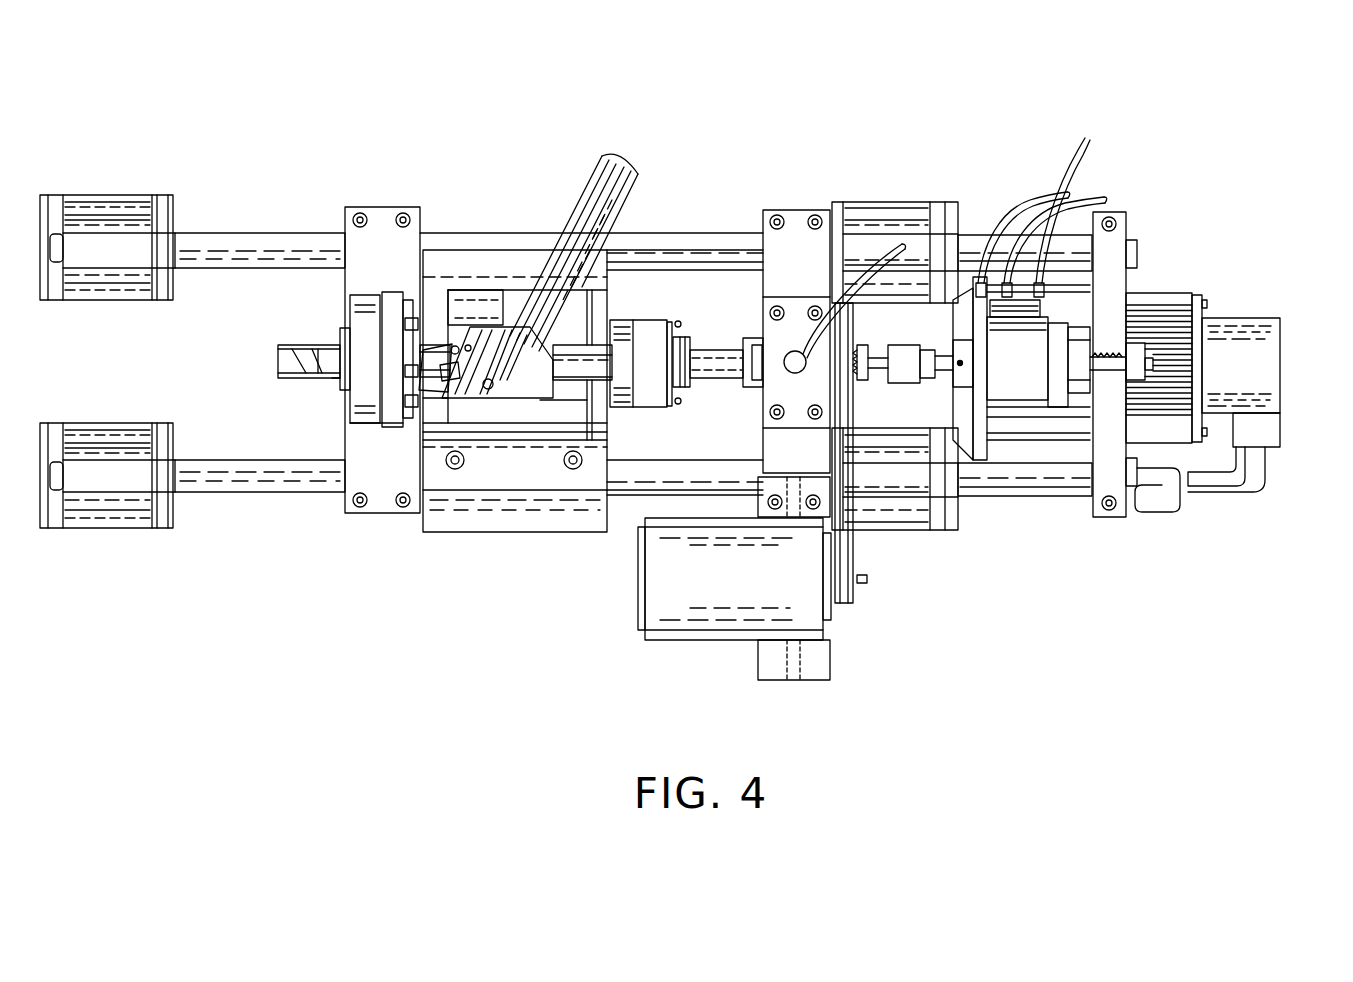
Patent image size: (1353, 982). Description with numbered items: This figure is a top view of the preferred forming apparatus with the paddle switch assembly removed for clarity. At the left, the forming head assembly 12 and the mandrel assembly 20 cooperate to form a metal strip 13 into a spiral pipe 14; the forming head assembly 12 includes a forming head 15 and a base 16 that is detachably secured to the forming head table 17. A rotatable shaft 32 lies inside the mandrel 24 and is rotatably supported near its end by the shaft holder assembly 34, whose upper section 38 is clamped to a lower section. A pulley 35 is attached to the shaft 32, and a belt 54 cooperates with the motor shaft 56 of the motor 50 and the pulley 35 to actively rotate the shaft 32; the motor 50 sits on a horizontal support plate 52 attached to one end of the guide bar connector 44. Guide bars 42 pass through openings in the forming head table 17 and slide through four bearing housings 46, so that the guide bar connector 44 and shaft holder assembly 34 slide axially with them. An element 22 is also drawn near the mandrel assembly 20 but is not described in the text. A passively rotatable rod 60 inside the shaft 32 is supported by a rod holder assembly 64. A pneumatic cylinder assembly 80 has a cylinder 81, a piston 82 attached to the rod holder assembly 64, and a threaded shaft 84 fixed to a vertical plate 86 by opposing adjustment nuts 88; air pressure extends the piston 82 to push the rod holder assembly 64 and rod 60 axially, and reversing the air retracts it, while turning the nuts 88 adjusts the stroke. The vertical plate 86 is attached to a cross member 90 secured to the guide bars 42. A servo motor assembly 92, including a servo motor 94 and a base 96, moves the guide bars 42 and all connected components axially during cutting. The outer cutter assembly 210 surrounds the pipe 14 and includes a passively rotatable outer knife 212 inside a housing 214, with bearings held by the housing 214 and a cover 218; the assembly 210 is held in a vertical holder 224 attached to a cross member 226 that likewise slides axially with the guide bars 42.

The forming head assembly 12 is at (500, 322).
The metal strip 13 is at (593, 167).
The spiral pipe 14 is at (300, 378).
The forming head 15 is at (545, 400).
The base 16 is at (437, 307).
The forming head table 17 is at (485, 532).
The mandrel assembly 20 is at (625, 297).
The motor 22 is at (647, 313).
The mandrel 24 is at (598, 382).
The rotatable shaft 32 is at (702, 353).
The shaft holder assembly 34 is at (762, 405).
The pulley 35 is at (860, 340).
The upper section 38 is at (760, 330).
The guide bars 42 is at (205, 233).
The guide bar connector 44 is at (790, 212).
The bearing housings 46 is at (118, 195).
The motor 50 is at (675, 640).
The horizontal support plate 52 is at (830, 660).
The belt 54 is at (855, 543).
The motor shaft 56 is at (867, 582).
The passively rotatable rod 60 is at (875, 372).
The rod holder assembly 64 is at (908, 337).
The pneumatic cylinder assembly 80 is at (1034, 358).
The cylinder 81 is at (1082, 141).
The piston 82 is at (945, 380).
The threaded shaft 84 is at (1160, 470).
The vertical plate 86 is at (1186, 478).
The adjustment nuts 88 is at (1163, 468).
The cross member 90 is at (1128, 225).
The servo motor assembly 92 is at (1145, 290).
The servo motor 94 is at (1205, 318).
The base 96 is at (1003, 440).
The outer cutter assembly 210 is at (368, 293).
The outer knife 212 is at (333, 381).
The housing 214 is at (370, 430).
The cover 218 is at (343, 317).
The vertical holder 224 is at (385, 430).
The cross member 226 is at (345, 282).